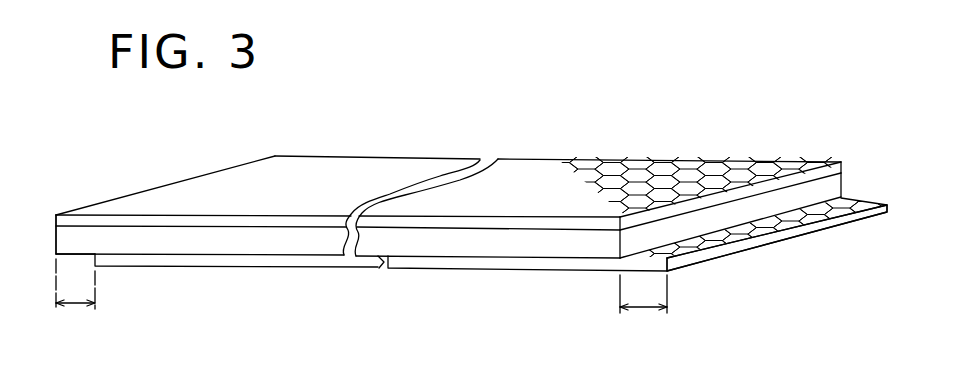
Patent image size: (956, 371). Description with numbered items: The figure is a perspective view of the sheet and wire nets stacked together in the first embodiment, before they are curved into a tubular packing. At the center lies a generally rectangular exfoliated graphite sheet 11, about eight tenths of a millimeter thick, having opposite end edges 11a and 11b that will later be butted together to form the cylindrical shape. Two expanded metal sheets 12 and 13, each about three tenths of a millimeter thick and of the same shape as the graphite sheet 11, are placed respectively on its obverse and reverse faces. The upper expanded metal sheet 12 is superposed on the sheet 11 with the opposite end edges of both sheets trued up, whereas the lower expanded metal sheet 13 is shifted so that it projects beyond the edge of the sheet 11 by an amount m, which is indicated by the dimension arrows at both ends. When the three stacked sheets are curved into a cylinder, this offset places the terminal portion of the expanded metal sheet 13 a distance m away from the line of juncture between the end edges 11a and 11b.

The exfoliated graphite sheet 11 is at (451, 248).
The end edge of the sheet 11a is at (698, 227).
The end edge of the sheet 11b is at (58, 236).
The expanded metal sheet 12 is at (535, 172).
The expanded metal sheet 13 is at (545, 265).
The projecting amount m is at (75, 306).